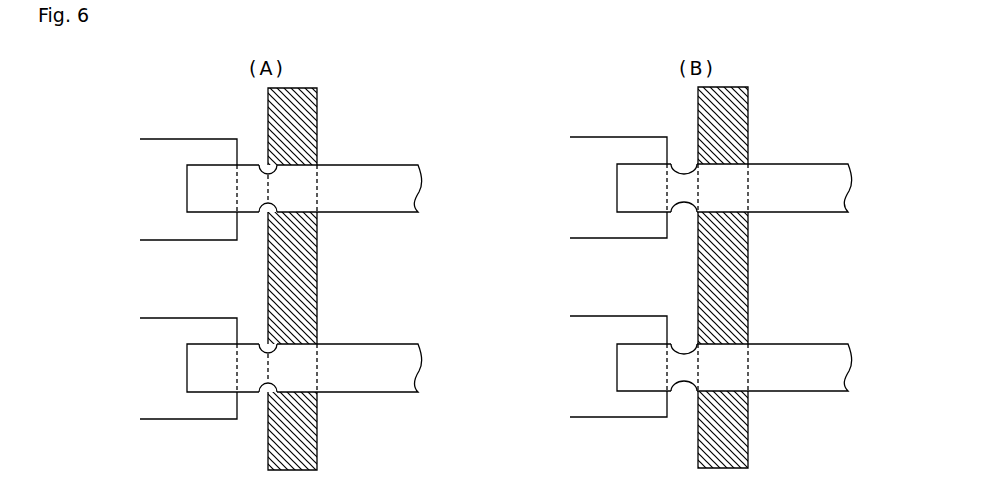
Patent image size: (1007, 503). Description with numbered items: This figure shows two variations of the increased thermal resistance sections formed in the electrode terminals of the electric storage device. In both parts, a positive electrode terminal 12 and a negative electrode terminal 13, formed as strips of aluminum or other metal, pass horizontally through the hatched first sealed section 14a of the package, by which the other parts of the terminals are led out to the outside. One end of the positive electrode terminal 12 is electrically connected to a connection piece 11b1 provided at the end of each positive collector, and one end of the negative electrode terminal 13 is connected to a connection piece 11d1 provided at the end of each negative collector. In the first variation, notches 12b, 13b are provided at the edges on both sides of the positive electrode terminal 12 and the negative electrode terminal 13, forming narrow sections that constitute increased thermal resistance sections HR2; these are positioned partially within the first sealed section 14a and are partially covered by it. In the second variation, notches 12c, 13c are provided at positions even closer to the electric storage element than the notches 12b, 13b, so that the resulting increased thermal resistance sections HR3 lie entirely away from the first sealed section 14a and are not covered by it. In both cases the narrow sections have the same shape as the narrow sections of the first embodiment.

The connection piece 11d1 is at (160, 152).
The connection piece 11b1 is at (164, 403).
The negative electrode terminal 13 is at (386, 176).
The positive electrode terminal 12 is at (387, 380).
The notch 13b is at (264, 163).
The notch 12b is at (264, 342).
The notch 13c is at (681, 163).
The notch 12c is at (681, 343).
The first sealed section 14a is at (304, 271).
The increased thermal resistance section HR2 is at (273, 187).
The increased thermal resistance section HR3 is at (680, 188).